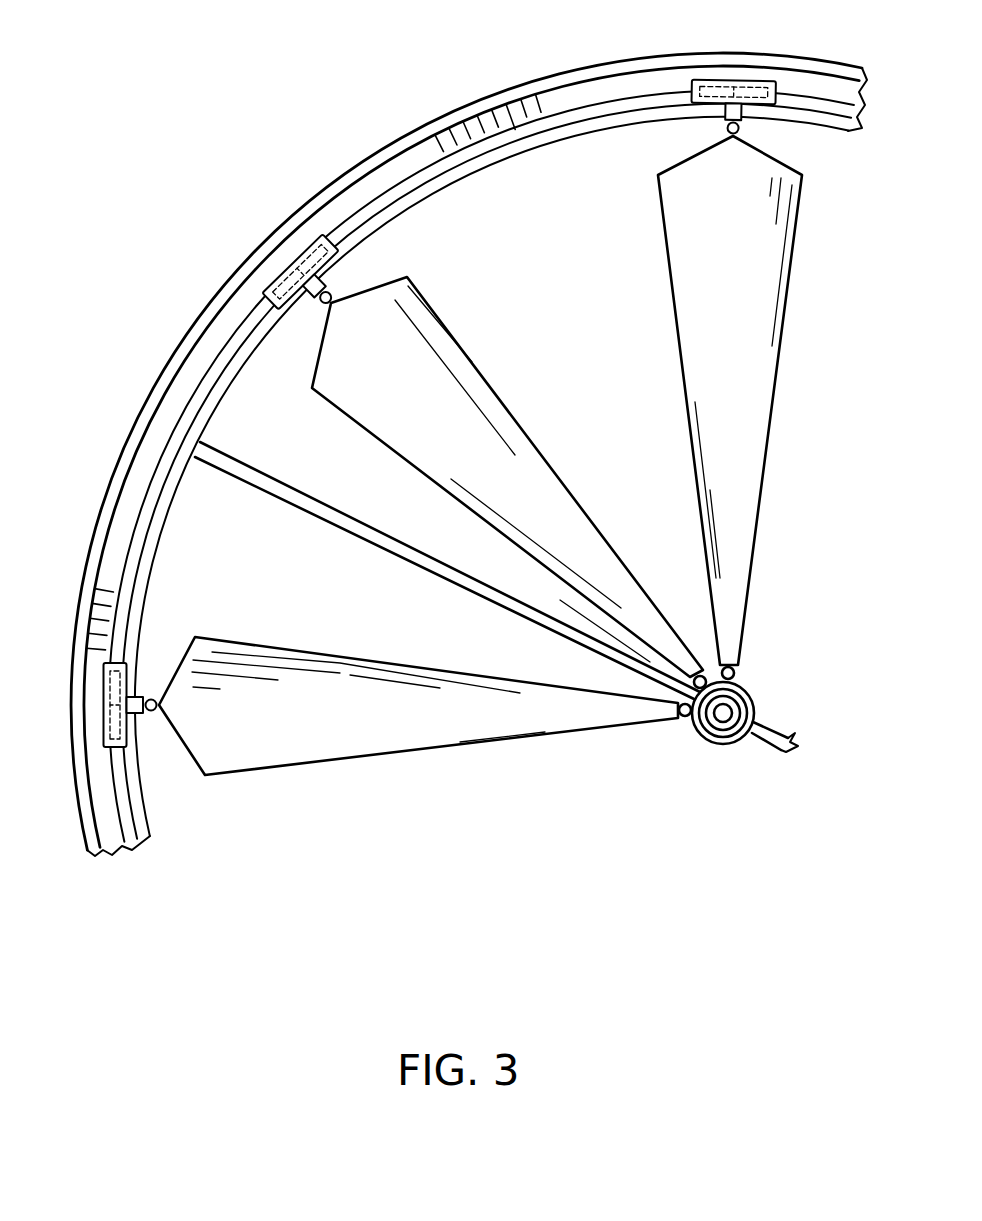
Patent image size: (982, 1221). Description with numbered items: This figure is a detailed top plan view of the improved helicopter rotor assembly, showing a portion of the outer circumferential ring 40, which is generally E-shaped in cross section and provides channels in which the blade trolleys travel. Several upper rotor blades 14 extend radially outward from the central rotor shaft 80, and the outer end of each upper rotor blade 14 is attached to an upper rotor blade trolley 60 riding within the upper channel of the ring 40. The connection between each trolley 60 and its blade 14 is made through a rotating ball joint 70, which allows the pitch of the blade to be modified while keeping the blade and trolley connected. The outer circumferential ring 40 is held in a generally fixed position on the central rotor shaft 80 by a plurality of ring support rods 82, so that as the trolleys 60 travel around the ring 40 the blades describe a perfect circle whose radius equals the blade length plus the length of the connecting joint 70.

The upper rotor blade 14 is at (748, 326).
The outer circumferential ring 40 is at (388, 146).
The upper rotor blade trolley 60 is at (296, 254).
The rotating ball joint 70 is at (333, 300).
The central rotor shaft 80 is at (723, 712).
The ring support rod 82 is at (260, 490).